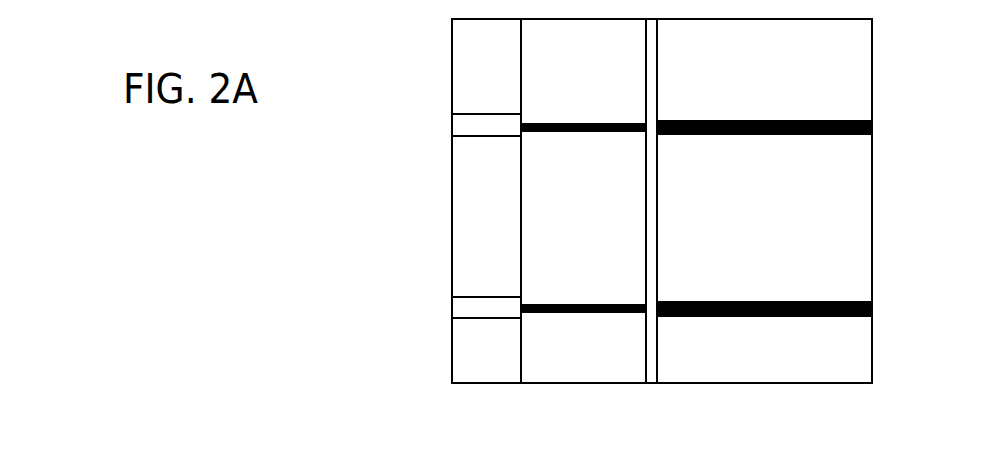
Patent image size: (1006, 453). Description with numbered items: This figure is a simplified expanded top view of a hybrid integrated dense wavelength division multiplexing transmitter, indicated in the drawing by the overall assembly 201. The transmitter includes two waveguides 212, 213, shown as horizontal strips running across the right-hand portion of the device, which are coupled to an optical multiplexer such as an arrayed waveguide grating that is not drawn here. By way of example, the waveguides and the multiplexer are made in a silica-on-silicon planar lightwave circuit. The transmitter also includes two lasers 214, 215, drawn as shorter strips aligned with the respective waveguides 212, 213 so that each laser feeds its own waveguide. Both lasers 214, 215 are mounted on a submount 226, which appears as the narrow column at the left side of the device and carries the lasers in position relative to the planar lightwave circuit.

The semiconductor device structure 201 is at (887, 223).
The waveguide 212 is at (732, 118).
The waveguide 213 is at (732, 300).
The laser 214 is at (537, 138).
The laser 215 is at (520, 302).
The submount 226 is at (480, 343).